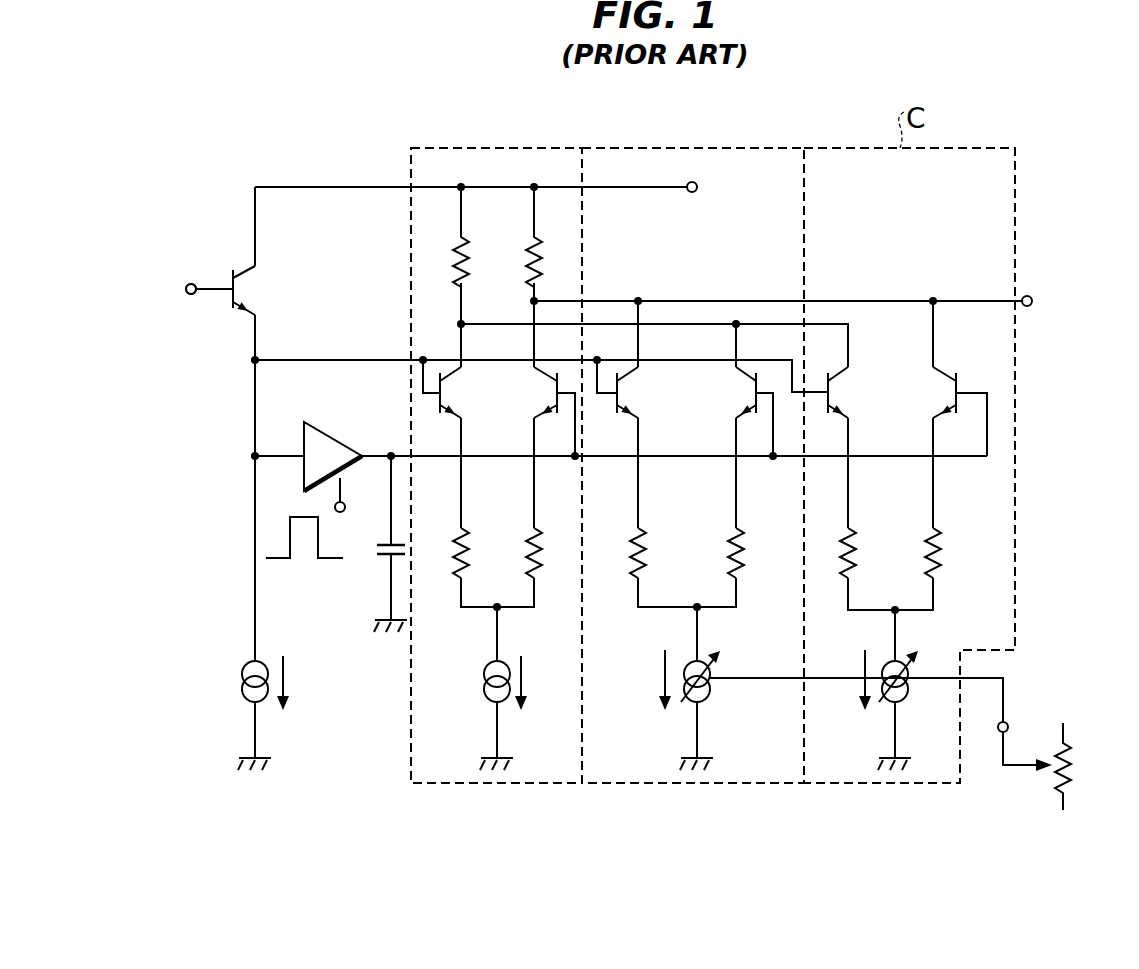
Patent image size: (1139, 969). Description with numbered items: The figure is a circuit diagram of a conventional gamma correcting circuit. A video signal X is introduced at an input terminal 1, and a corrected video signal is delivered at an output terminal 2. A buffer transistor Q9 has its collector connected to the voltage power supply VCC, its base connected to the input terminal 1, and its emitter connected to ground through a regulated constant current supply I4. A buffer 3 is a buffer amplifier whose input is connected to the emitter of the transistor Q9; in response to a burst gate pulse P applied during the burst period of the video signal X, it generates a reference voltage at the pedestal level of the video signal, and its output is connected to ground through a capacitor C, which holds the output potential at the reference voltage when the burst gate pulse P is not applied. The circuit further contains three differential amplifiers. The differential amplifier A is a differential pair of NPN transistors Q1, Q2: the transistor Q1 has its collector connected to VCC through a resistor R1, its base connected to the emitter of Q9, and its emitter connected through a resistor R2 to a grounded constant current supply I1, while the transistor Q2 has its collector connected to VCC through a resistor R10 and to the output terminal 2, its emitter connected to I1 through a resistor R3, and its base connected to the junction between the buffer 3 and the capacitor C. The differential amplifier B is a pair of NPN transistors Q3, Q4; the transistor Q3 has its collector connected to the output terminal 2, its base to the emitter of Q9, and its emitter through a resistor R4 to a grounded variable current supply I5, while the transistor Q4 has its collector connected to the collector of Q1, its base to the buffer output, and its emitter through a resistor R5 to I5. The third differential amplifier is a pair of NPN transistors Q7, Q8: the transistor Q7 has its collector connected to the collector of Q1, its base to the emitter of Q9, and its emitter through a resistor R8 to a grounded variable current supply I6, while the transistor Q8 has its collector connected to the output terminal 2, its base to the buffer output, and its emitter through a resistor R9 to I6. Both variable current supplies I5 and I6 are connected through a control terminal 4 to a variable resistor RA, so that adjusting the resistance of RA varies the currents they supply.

The input terminal 1 is at (184, 282).
The video signal X is at (188, 298).
The output terminal 2 is at (1030, 303).
The buffer 3 is at (336, 439).
The control terminal 4 is at (1022, 753).
The differential amplifier A is at (494, 148).
The differential amplifier B is at (690, 148).
The voltage power supply VCC is at (723, 187).
The burst gate pulse P is at (304, 556).
The capacitor C is at (380, 550).
The buffer transistor Q9 is at (240, 289).
The transistor Q1 is at (445, 387).
The transistor Q2 is at (552, 397).
The transistor Q3 is at (640, 387).
The transistor Q4 is at (748, 397).
The transistor Q7 is at (845, 387).
The transistor Q8 is at (953, 397).
The resistor R1 is at (465, 247).
The resistor R10 is at (528, 266).
The resistor R2 is at (468, 552).
The resistor R3 is at (538, 552).
The resistor R4 is at (648, 542).
The resistor R5 is at (738, 543).
The resistor R8 is at (854, 534).
The resistor R9 is at (940, 536).
The variable resistor RA is at (1064, 745).
The constant current supply I1 is at (492, 662).
The constant current supply I4 is at (246, 677).
The variable current supply I5 is at (709, 674).
The variable current supply I6 is at (890, 668).